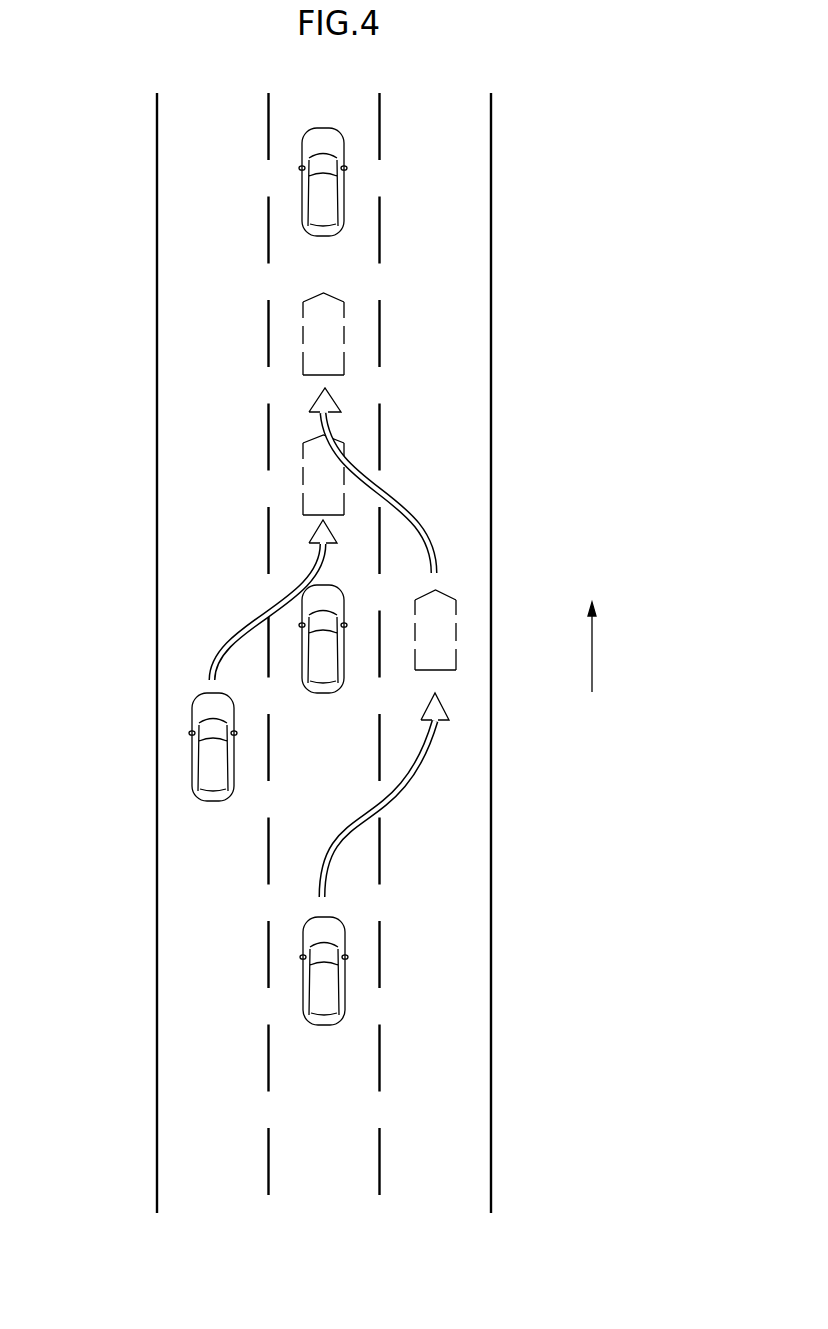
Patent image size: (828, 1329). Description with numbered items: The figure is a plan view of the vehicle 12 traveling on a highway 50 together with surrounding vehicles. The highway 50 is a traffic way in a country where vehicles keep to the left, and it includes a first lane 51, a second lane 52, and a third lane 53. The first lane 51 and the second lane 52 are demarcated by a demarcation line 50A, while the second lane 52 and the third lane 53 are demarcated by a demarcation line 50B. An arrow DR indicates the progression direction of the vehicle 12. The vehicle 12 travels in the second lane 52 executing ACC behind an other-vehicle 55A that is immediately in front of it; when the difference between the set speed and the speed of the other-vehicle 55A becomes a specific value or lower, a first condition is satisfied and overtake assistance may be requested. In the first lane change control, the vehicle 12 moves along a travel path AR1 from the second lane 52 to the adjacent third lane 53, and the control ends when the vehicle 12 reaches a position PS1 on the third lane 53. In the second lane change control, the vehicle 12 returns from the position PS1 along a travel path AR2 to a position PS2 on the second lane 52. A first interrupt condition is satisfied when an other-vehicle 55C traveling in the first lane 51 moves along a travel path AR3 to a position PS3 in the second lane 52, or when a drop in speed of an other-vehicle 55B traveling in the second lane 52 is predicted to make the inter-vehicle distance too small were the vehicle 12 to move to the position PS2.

The highway 50 is at (354, 653).
The demarcation line 50A is at (266, 342).
The demarcation line 50B is at (384, 970).
The first lane 51 is at (170, 216).
The second lane 52 is at (319, 653).
The third lane 53 is at (473, 224).
The vehicle 12 is at (302, 1001).
The other-vehicle 55A is at (322, 692).
The other-vehicle 55B is at (345, 178).
The other-vehicle 55C is at (192, 786).
The position PS1 is at (456, 648).
The position PS2 is at (345, 328).
The position PS3 is at (300, 495).
The travel path AR1 is at (410, 780).
The travel path AR2 is at (420, 528).
The travel path AR3 is at (245, 618).
The arrow DR is at (593, 655).